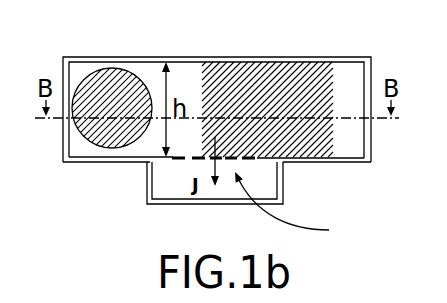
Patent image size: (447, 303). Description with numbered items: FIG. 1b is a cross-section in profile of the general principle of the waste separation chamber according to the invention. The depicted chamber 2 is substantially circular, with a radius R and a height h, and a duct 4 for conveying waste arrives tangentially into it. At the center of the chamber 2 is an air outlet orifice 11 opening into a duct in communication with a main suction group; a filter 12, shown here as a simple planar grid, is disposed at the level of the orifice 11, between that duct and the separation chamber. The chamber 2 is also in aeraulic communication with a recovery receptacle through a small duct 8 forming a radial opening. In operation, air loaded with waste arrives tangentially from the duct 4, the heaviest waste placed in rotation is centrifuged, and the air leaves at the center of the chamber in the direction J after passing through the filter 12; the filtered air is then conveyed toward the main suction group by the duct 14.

The chamber 2 is at (230, 57).
The duct 4 is at (93, 70).
The small duct 8 is at (308, 63).
The orifice 11 is at (302, 214).
The filter 12 is at (195, 160).
The duct 14 is at (282, 192).